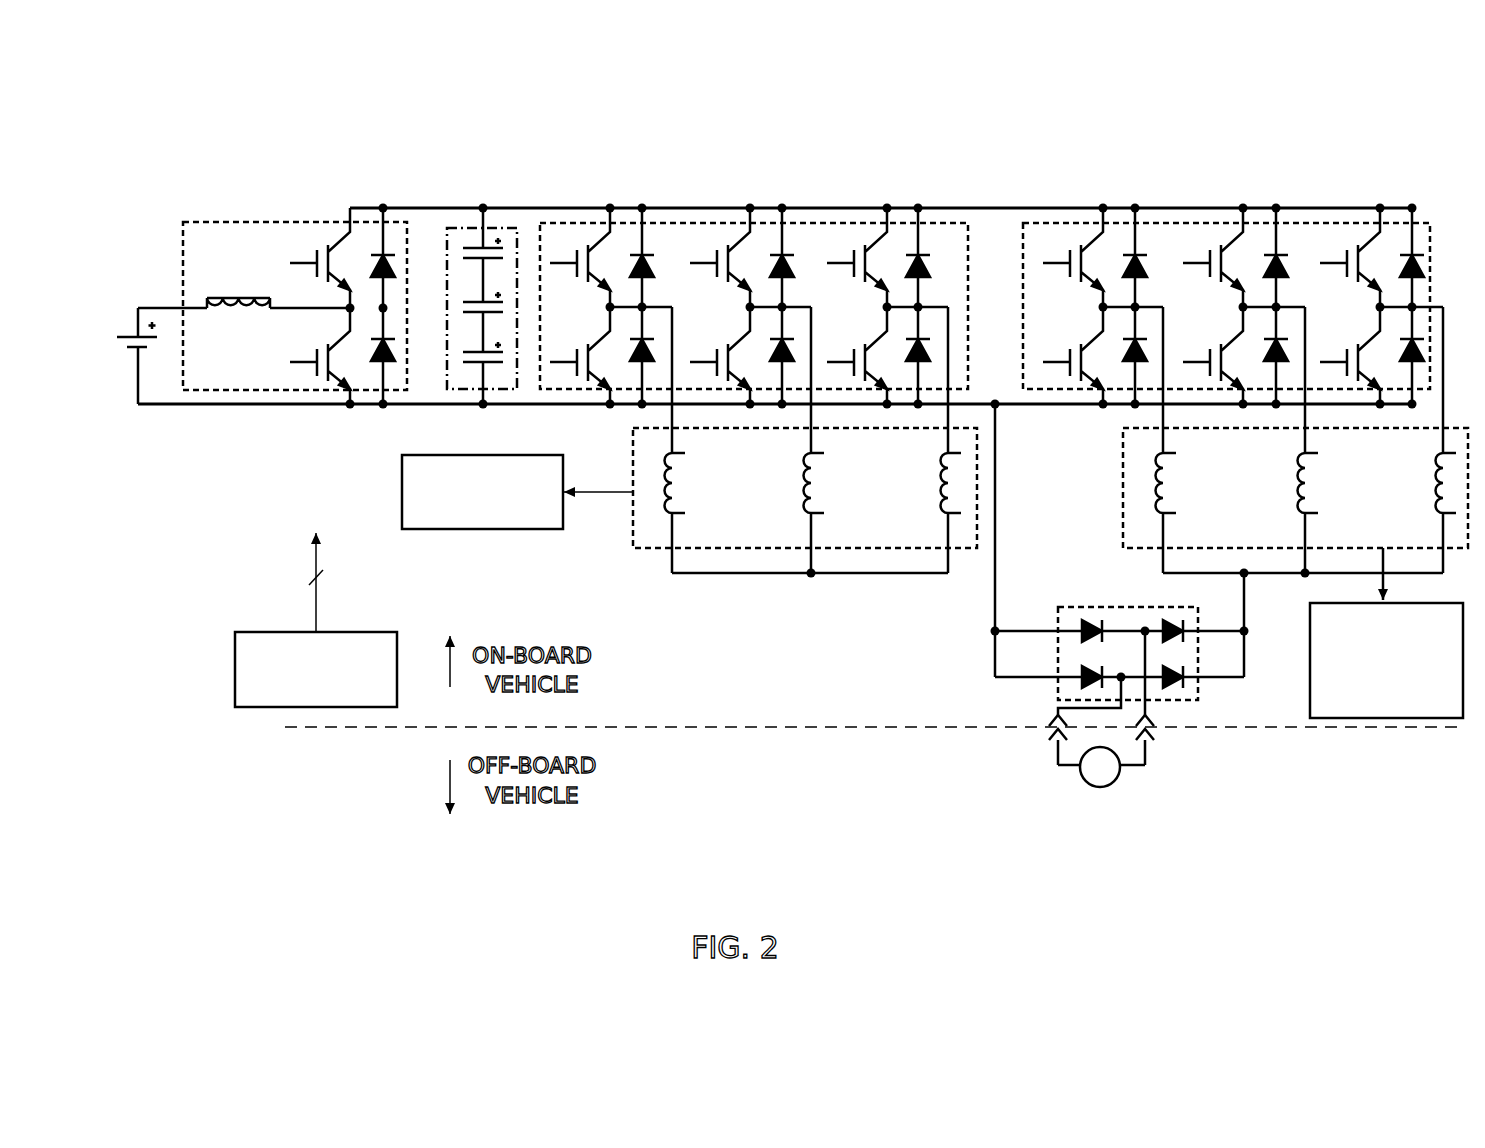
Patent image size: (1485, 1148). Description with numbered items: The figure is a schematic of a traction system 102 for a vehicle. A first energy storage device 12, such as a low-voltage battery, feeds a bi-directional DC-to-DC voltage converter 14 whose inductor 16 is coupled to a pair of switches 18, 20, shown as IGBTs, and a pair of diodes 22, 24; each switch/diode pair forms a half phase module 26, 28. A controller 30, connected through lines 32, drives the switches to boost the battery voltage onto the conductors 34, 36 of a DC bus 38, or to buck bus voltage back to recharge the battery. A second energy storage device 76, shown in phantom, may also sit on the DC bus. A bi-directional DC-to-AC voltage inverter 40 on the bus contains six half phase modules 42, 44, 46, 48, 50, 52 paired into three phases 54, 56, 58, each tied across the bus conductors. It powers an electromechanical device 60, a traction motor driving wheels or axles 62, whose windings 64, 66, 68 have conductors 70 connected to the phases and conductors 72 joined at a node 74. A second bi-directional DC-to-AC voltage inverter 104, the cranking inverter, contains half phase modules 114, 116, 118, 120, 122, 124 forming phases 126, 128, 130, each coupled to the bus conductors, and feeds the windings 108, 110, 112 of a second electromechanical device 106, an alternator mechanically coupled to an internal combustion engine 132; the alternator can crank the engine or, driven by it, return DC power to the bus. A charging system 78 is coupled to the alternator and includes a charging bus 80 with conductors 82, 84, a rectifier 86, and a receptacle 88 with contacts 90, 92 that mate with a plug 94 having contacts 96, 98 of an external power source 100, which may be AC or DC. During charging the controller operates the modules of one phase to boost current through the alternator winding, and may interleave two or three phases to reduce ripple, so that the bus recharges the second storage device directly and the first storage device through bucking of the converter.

The first energy storage device 12 is at (135, 326).
The bi-directional DC-to-DC voltage converter 14 is at (215, 222).
The inductor 16 is at (212, 298).
The switch 18 is at (292, 262).
The switch 20 is at (292, 347).
The diode 22 is at (390, 258).
The diode 24 is at (390, 362).
The half phase module 26 is at (342, 233).
The half phase module 28 is at (286, 349).
The controller 30 is at (235, 670).
The lines 32 is at (318, 600).
The conductor 34 is at (429, 295).
The conductor 36 is at (429, 318).
The DC bus 38 is at (422, 303).
The bi-directional DC-to-AC voltage inverter 40 is at (552, 222).
The half phase module 42 is at (598, 222).
The half phase module 44 is at (594, 318).
The half phase module 46 is at (737, 222).
The half phase module 48 is at (734, 318).
The half phase module 50 is at (874, 222).
The half phase module 52 is at (872, 318).
The phase 54 is at (627, 193).
The phase 56 is at (752, 193).
The phase 58 is at (892, 193).
The electromechanical device 60 is at (633, 460).
The driving wheels or axles 62 is at (402, 503).
The winding 64 is at (681, 492).
The winding 66 is at (820, 492).
The winding 68 is at (949, 467).
The conductors 70 is at (674, 445).
The conductors 72 is at (673, 543).
The node 74 is at (808, 576).
The second energy storage device 76 is at (498, 392).
The charging system 78 is at (1211, 745).
The charging bus 80 is at (1243, 598).
The conductor 82 is at (1246, 600).
The conductor 84 is at (993, 600).
The rectifier 86 is at (1057, 645).
The receptacle 88 is at (989, 715).
The contact 90 is at (1054, 718).
The contact 92 is at (1150, 718).
The plug 94 is at (999, 745).
The contact 96 is at (1055, 742).
The contact 98 is at (1150, 740).
The external power source 100 is at (1097, 788).
The traction system 102 is at (921, 100).
The second bi-directional DC-to-AC voltage inverter 104 is at (1047, 222).
The second electromechanical device 106 is at (1123, 460).
The winding 108 is at (1173, 492).
The winding 110 is at (1314, 492).
The winding 112 is at (1448, 467).
The half phase module 114 is at (1082, 238).
The half phase module 116 is at (1090, 318).
The half phase module 118 is at (1222, 238).
The half phase module 120 is at (1231, 318).
The half phase module 122 is at (1360, 238).
The half phase module 124 is at (1368, 318).
The phase 126 is at (1107, 190).
The phase 128 is at (1252, 190).
The phase 130 is at (1386, 190).
The internal combustion engine 132 is at (1310, 692).